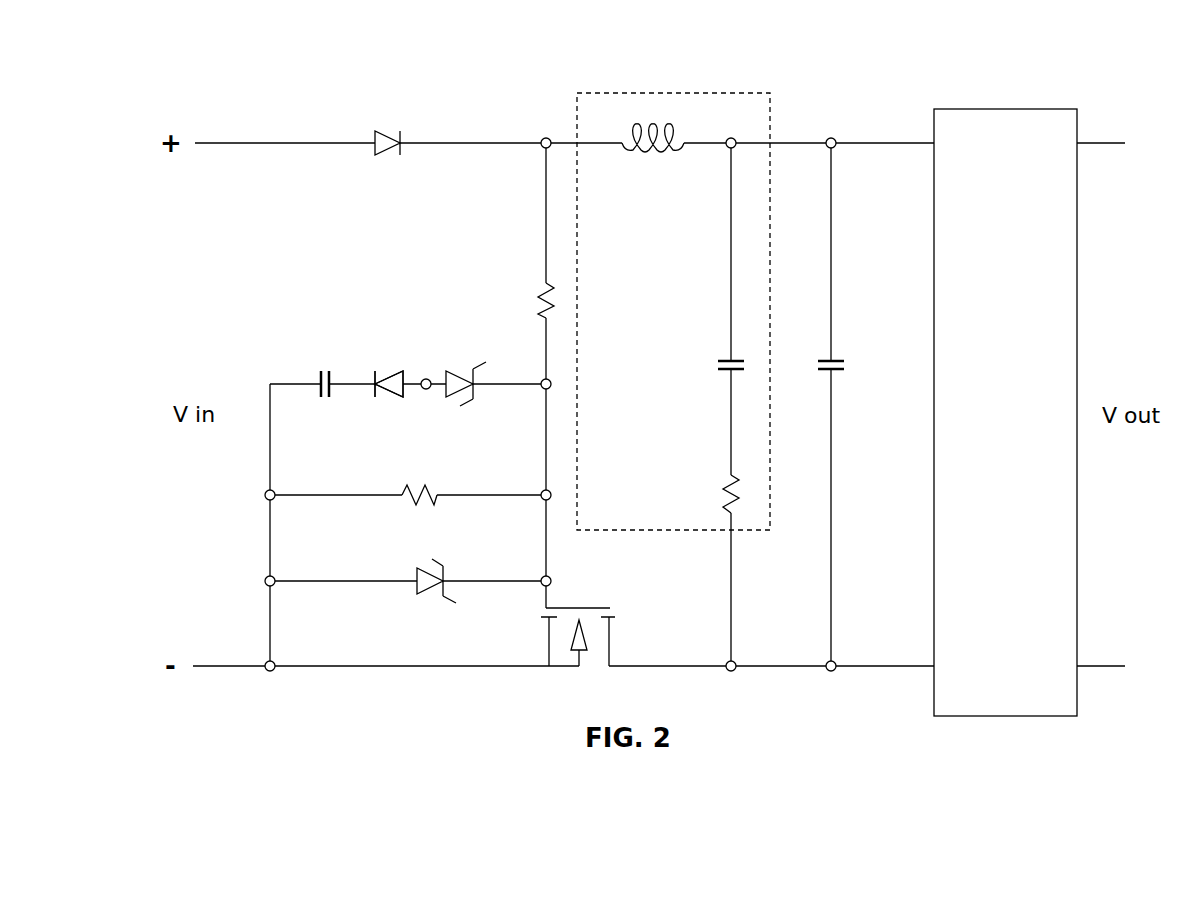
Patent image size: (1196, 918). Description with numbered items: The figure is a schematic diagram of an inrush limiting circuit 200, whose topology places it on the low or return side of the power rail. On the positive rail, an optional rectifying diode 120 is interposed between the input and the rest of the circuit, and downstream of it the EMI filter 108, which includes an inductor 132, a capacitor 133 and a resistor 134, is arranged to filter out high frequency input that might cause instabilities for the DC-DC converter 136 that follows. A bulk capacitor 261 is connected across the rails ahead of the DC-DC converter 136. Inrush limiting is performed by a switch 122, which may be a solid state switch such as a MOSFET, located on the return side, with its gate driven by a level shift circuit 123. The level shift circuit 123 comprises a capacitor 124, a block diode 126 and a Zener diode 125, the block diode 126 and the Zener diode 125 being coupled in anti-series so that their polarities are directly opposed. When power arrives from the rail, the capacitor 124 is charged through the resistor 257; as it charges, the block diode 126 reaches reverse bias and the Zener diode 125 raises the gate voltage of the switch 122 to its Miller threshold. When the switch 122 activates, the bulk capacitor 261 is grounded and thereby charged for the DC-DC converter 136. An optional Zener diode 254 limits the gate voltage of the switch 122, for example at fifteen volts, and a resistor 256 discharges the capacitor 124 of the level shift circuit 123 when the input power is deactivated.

The rectifying diode 120 is at (387, 127).
The resistor 257 is at (536, 300).
The inductor 132 is at (651, 127).
The EMI filter 108 is at (741, 93).
The capacitor 133 is at (718, 356).
The resistor 134 is at (718, 500).
The bulk capacitor 261 is at (839, 356).
The DC-DC converter 136 is at (1041, 95).
The capacitor 124 is at (318, 371).
The block diode 126 is at (394, 367).
The level shift circuit 123 is at (380, 401).
The Zener diode 125 is at (461, 362).
The resistor 256 is at (415, 483).
The Zener diode 254 is at (418, 567).
The switch 122 is at (592, 600).
The inrush limiting circuit 200 is at (1054, 750).